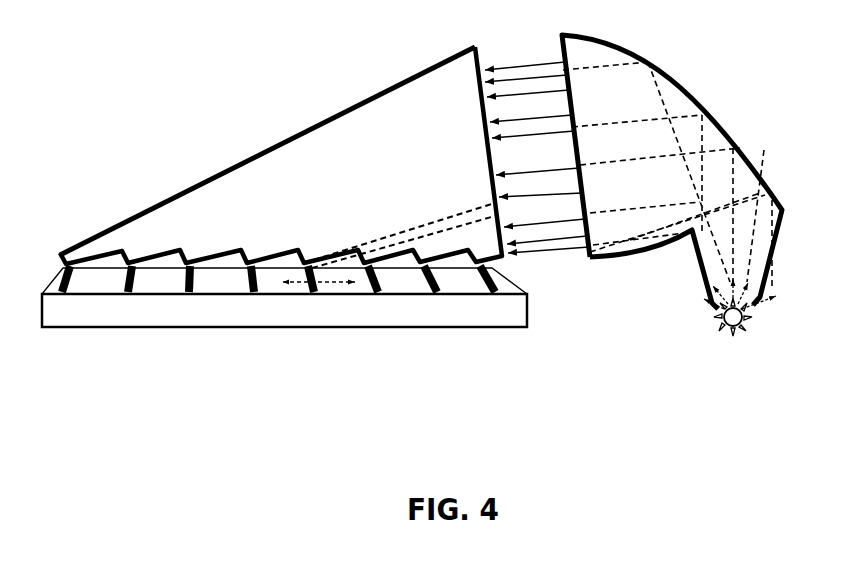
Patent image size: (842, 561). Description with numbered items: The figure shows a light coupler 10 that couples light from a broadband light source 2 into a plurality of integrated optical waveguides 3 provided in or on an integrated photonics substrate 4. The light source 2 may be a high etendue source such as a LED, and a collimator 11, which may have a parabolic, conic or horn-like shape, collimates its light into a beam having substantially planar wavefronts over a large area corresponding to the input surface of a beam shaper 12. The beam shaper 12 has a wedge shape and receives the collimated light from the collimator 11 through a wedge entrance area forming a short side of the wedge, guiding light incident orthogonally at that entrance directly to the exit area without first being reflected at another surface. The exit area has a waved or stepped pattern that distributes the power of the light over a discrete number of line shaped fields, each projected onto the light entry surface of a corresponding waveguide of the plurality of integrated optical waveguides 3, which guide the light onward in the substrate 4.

The light coupler 10 is at (322, 72).
The beam shaper 12 is at (170, 197).
The integrated optical waveguides 3 is at (312, 294).
The integrated photonics substrate 4 is at (417, 330).
The collimator 11 is at (697, 267).
The broadband light source 2 is at (729, 350).